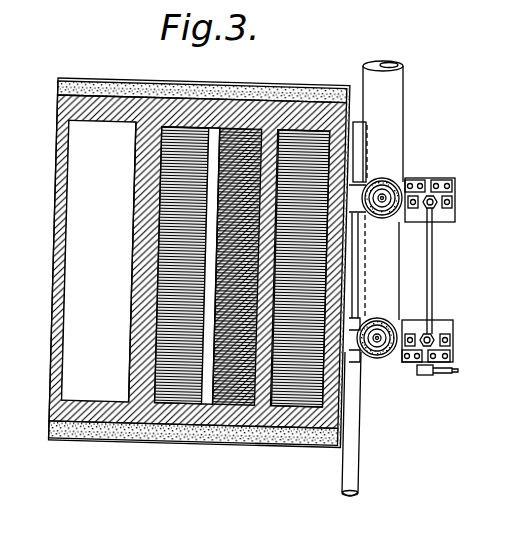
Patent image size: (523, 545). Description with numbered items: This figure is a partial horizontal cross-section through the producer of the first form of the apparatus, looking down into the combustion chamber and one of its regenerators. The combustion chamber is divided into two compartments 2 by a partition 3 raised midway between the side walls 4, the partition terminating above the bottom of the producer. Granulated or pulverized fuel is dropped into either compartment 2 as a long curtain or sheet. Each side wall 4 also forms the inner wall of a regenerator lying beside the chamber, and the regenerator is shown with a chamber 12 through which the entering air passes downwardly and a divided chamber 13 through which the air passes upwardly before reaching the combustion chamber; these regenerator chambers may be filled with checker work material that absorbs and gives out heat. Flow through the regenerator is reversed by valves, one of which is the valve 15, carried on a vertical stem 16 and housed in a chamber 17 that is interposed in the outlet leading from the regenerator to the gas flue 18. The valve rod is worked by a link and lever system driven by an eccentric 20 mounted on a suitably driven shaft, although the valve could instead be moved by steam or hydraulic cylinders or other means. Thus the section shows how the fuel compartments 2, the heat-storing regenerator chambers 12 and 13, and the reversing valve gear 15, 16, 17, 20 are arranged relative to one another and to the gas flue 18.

The compartment 2 is at (99, 261).
The partition 3 is at (57, 251).
The side wall 4 is at (150, 249).
The regenerator chamber 12 is at (303, 401).
The divided chamber 13 is at (209, 402).
The valve 15 is at (383, 204).
The vertical stem 16 is at (396, 186).
The chamber 17 is at (397, 216).
The gas flue 18 is at (372, 278).
The eccentric 20 is at (433, 339).